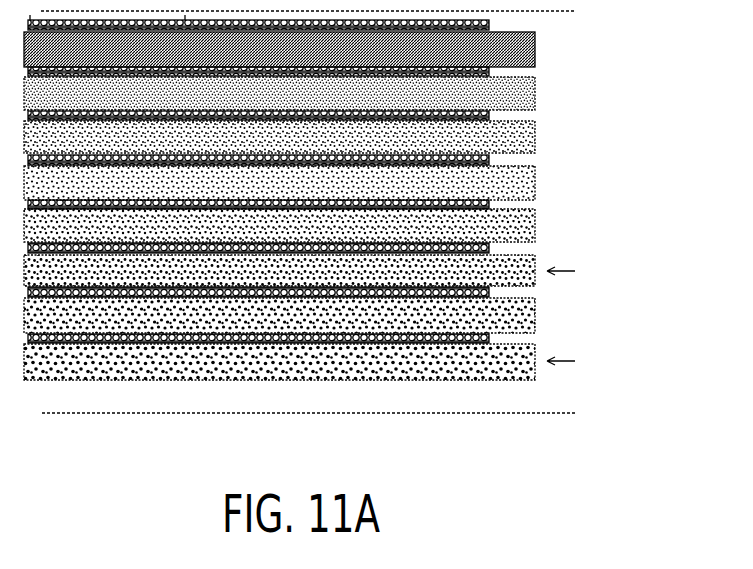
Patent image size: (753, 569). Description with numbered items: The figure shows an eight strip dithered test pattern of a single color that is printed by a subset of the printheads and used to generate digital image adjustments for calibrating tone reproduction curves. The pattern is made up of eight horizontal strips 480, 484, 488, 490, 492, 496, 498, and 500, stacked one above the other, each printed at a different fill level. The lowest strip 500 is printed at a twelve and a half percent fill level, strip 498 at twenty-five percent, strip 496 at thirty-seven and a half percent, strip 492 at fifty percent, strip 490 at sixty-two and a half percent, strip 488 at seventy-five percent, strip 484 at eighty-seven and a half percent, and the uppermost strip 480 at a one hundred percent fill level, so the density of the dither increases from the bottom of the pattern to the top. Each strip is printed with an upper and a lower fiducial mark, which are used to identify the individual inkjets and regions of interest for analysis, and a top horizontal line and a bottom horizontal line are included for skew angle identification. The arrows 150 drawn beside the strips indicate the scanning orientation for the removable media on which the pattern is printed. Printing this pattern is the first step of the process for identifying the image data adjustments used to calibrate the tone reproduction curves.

The arrows 150 is at (547, 94).
The strip 480 is at (535, 48).
The strip 484 is at (535, 88).
The strip 488 is at (535, 137).
The strip 490 is at (535, 175).
The strip 492 is at (535, 226).
The strip 496 is at (535, 262).
The strip 498 is at (535, 316).
The strip 500 is at (517, 380).